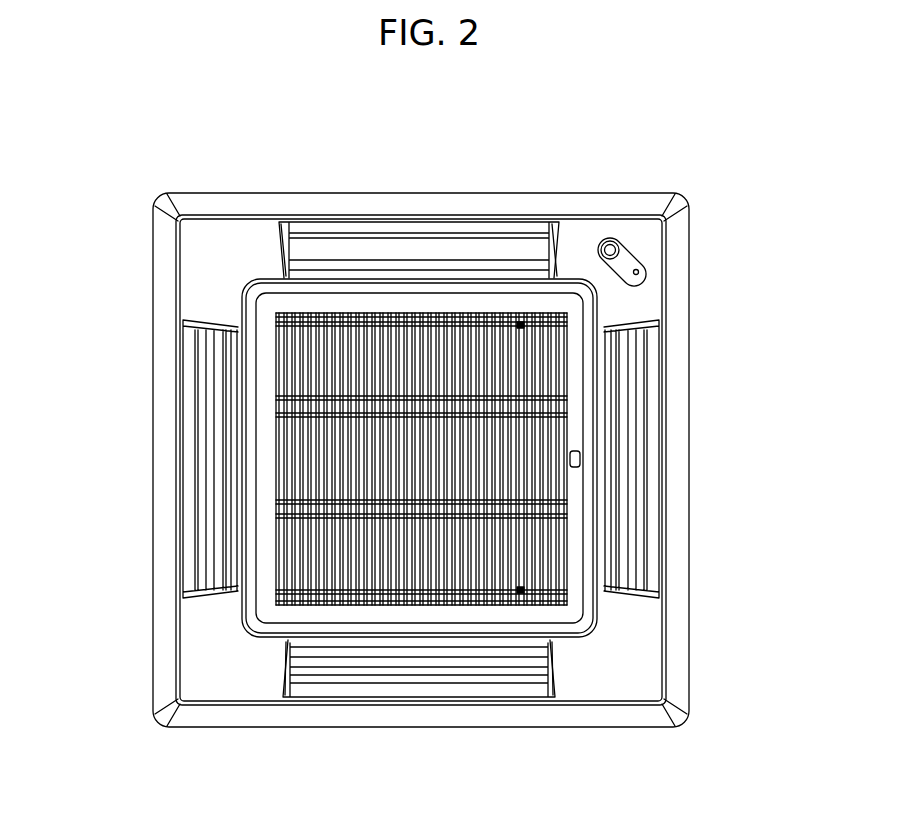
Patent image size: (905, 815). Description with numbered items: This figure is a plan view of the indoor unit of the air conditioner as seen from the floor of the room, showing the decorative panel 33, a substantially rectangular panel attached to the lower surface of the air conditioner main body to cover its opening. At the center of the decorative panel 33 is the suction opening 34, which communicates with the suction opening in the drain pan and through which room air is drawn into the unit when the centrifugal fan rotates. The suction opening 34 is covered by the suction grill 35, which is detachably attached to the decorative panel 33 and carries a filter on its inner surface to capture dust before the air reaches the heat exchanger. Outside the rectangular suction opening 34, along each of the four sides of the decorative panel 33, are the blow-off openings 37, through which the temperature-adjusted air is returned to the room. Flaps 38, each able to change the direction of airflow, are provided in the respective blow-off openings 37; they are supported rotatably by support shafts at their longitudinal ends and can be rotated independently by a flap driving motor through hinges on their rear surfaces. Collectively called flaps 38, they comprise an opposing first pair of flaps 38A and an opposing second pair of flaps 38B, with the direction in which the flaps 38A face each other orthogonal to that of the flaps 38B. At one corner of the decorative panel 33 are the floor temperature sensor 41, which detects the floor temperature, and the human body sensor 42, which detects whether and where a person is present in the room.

The decorative panel 33 is at (549, 202).
The suction opening 34 is at (492, 365).
The suction grill 35 is at (270, 306).
The blow-off openings 37 is at (289, 240).
The flaps 38 is at (424, 452).
The flaps (first pair of flaps) 38A is at (403, 250).
The flaps (second pair of flaps) 38B is at (212, 452).
The floor temperature sensor 41 is at (641, 271).
The human body sensor 42 is at (610, 250).